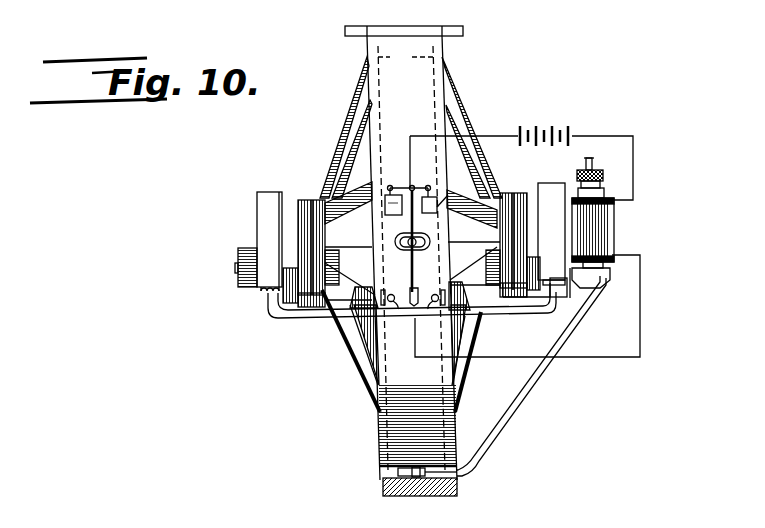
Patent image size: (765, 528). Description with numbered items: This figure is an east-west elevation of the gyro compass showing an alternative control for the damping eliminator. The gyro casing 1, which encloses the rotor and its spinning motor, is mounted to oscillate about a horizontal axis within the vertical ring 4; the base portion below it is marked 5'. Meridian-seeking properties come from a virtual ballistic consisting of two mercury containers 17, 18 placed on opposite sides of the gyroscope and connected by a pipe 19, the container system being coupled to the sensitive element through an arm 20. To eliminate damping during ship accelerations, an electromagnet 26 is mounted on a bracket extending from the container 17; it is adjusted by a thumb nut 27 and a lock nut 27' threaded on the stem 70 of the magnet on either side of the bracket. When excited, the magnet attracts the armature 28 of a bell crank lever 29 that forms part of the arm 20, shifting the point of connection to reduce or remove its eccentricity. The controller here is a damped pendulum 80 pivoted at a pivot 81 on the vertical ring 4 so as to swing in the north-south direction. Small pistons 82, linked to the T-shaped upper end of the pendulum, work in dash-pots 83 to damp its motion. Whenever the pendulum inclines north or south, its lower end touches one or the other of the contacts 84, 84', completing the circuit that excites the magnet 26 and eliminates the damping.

The gyro casing 1 is at (362, 172).
The vertical ring 4 is at (404, 253).
The base 5' is at (434, 495).
The container 17 is at (262, 203).
The container 18 is at (549, 190).
The pipe 19 is at (268, 313).
The arm 20 is at (537, 384).
The electromagnet 26 is at (614, 232).
The thumb nut 27 is at (604, 166).
The lock nut 27' is at (630, 188).
The armature 28 is at (606, 271).
The bell crank lever 29 is at (602, 282).
The stem 70 is at (600, 151).
The damped pendulum 80 is at (414, 306).
The pivot 81 is at (521, 169).
The small pistons 82 is at (393, 186).
The dash-pots 83 is at (488, 190).
The contact 84 is at (353, 333).
The contact 84' is at (479, 319).